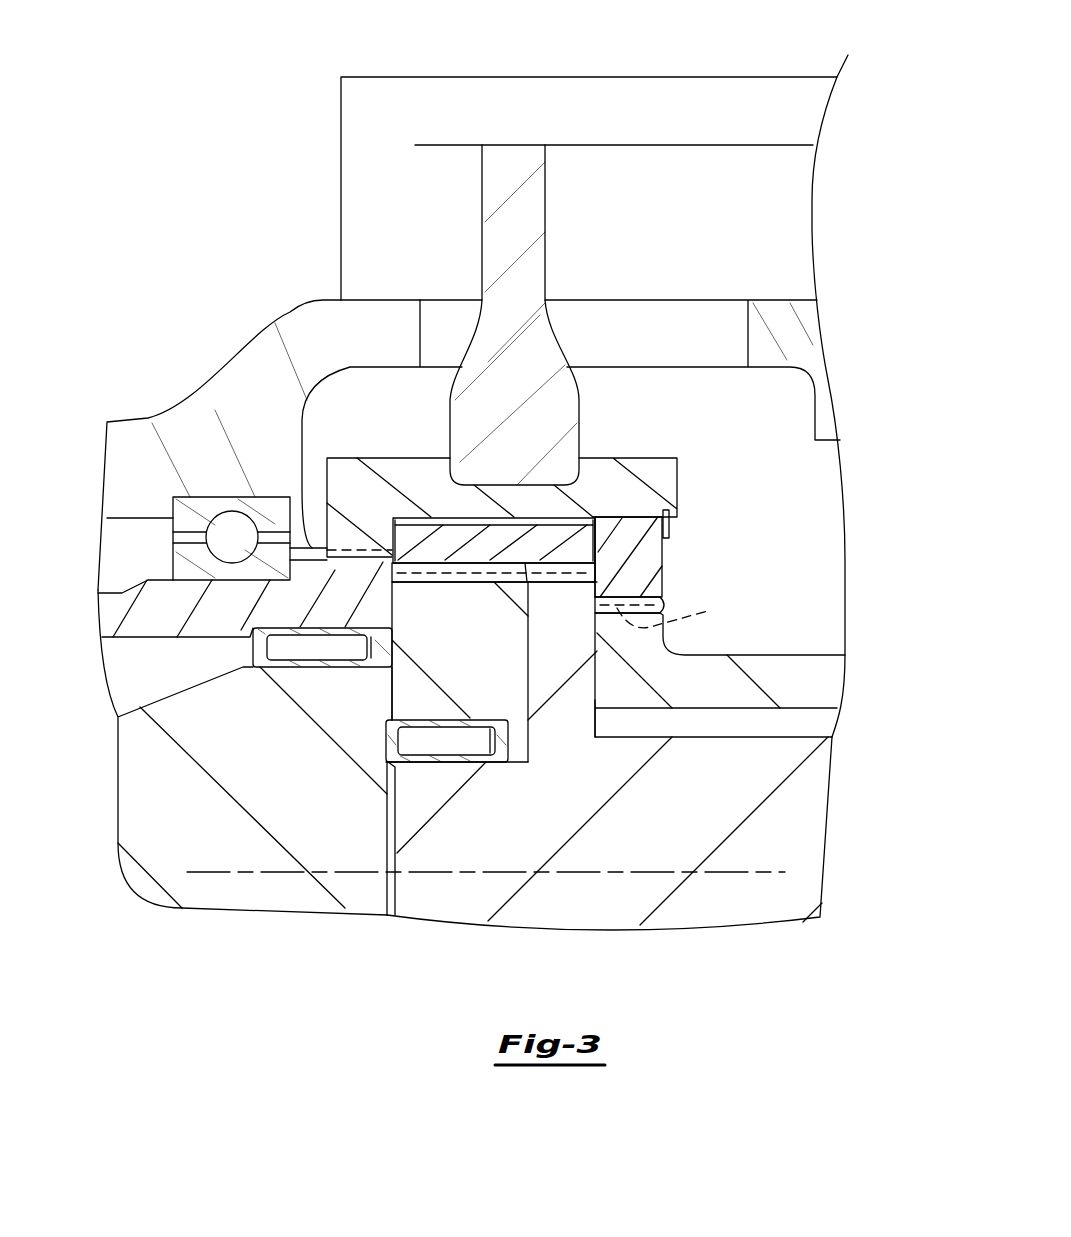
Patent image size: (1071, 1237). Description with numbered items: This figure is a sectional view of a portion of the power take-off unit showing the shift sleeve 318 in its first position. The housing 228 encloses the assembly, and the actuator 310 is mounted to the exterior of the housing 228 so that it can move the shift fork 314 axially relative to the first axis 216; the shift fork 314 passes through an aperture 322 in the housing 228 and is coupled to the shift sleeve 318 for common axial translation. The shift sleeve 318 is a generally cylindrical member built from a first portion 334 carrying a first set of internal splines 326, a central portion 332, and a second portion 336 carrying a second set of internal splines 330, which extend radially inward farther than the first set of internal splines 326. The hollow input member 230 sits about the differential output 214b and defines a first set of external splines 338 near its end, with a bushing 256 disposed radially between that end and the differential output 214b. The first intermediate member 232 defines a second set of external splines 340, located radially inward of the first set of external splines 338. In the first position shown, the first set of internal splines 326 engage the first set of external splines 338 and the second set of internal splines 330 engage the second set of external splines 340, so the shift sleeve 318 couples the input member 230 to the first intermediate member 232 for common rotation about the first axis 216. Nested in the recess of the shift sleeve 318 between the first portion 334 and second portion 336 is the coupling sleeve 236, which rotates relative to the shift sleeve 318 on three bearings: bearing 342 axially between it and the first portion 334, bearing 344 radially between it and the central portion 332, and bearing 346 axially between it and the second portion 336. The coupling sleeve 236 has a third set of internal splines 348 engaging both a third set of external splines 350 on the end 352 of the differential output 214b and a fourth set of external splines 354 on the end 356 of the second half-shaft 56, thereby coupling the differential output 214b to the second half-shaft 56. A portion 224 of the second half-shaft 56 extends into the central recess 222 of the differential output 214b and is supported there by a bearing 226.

The actuator 310 is at (672, 77).
The shift fork 314 is at (493, 235).
The aperture 322 is at (655, 310).
The housing 228 is at (118, 420).
The shift sleeve 318 is at (377, 455).
The first portion 334 is at (345, 490).
The coupling sleeve 236 is at (428, 538).
The bearing 344 is at (500, 520).
The central portion 332 is at (570, 495).
The first set of external splines 338 is at (313, 545).
The bearing 346 is at (597, 535).
The bearing 342 is at (392, 525).
The second portion 336 is at (657, 556).
The second set of external splines 340 is at (655, 600).
The second set of internal splines 330 is at (679, 613).
The first intermediate member 232 is at (785, 675).
The first set of internal splines 326 is at (347, 553).
The third set of internal splines 348 is at (415, 585).
The third set of external splines 350 is at (457, 672).
The fourth set of external splines 354 is at (545, 585).
The input member 230 is at (167, 622).
The bushing 256 is at (318, 655).
The differential output 214b is at (160, 795).
The end 352 is at (530, 727).
The bearing 226 is at (470, 747).
The end 356 is at (585, 717).
The first axis 216 is at (222, 872).
The central recess 222 is at (385, 897).
The portion 224 is at (430, 895).
The second half-shaft 56 is at (700, 920).